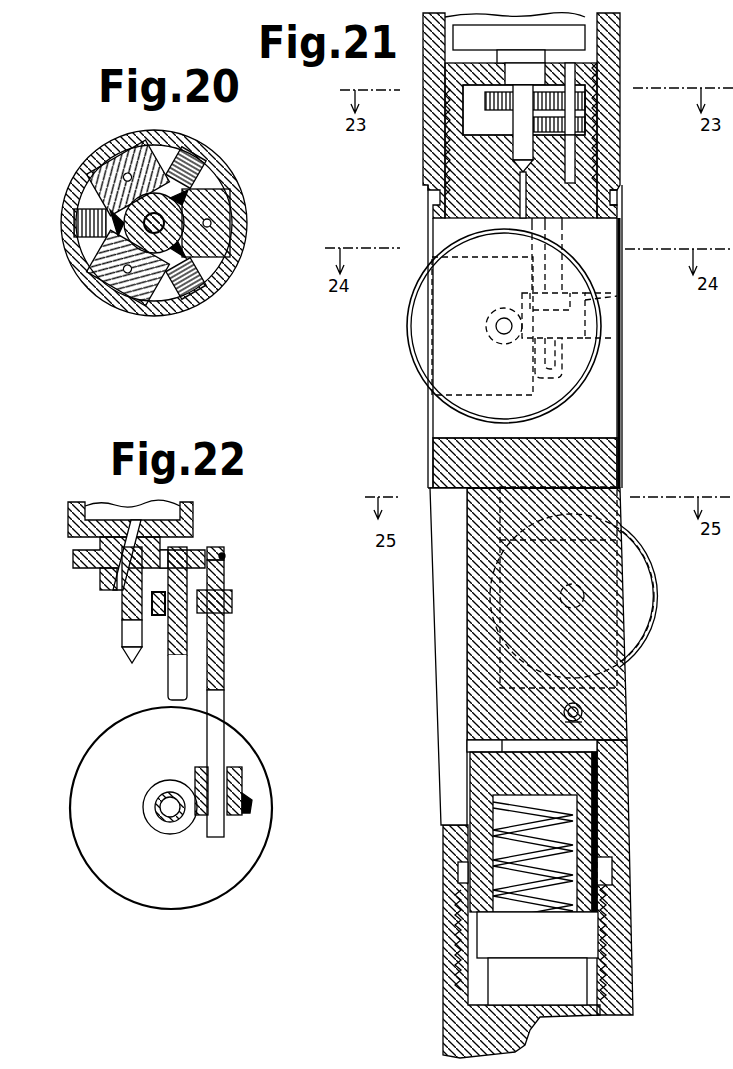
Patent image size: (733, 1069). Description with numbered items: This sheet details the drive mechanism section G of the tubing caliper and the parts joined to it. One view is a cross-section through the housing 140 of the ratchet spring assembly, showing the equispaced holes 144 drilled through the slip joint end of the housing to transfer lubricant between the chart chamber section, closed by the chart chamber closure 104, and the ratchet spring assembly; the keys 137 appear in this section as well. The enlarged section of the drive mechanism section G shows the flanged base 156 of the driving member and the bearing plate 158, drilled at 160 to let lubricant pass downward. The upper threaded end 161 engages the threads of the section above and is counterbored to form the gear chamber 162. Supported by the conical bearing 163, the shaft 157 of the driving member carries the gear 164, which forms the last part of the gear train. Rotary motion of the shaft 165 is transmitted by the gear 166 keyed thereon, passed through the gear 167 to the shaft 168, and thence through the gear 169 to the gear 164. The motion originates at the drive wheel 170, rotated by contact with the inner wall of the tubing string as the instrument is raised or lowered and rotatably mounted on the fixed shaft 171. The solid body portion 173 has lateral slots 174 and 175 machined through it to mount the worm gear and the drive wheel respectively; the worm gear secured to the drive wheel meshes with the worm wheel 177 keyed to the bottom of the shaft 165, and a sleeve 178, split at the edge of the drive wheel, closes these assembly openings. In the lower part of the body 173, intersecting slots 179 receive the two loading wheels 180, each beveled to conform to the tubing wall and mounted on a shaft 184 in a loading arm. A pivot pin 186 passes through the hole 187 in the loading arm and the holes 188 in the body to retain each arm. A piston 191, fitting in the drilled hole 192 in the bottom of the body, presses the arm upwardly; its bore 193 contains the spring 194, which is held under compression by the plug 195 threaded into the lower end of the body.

In FIG. 20, the chart chamber closure 104 is at (245, 212).
In FIG. 20, the key 137 is at (192, 157).
In FIG. 20, the housing 140 is at (213, 240).
In FIG. 20, the equispaced holes 144 is at (127, 177).
In FIG. 21, the flanged base 156 is at (577, 43).
In FIG. 22, the shaft 157 is at (128, 628).
In FIG. 21, the shaft 157 is at (519, 147).
In FIG. 21, the bearing plate 158 is at (586, 68).
In FIG. 21, the drilled hole 160 is at (598, 67).
In FIG. 21, the upper threaded end 161 is at (582, 122).
In FIG. 21, the gear chamber 162 is at (473, 90).
In FIG. 22, the conical bearing 163 is at (128, 653).
In FIG. 21, the conical bearing 163 is at (521, 168).
In FIG. 22, the gear 164 is at (101, 590).
In FIG. 21, the gear 164 is at (485, 105).
In FIG. 22, the shaft 165 is at (217, 706).
In FIG. 21, the shaft 165 is at (555, 223).
In FIG. 22, the gear 166 is at (232, 600).
In FIG. 21, the gear 166 is at (606, 168).
In FIG. 22, the gear 167 is at (160, 617).
In FIG. 21, the gear 167 is at (574, 150).
In FIG. 22, the shaft 168 is at (170, 688).
In FIG. 21, the shaft 168 is at (576, 177).
In FIG. 22, the gear 169 is at (223, 551).
In FIG. 21, the gear 169 is at (574, 98).
In FIG. 22, the drive wheel 170 is at (93, 786).
In FIG. 21, the drive wheel 170 is at (427, 310).
In FIG. 22, the fixed shaft 171 is at (170, 807).
In FIG. 21, the fixed shaft 171 is at (488, 330).
In FIG. 21, the solid body portion 173 is at (622, 467).
In FIG. 21, the lateral slot 174 is at (463, 282).
In FIG. 21, the lateral slot 175 is at (618, 338).
In FIG. 22, the worm wheel 177 is at (250, 789).
In FIG. 21, the worm wheel 177 is at (600, 302).
In FIG. 21, the sleeve 178 is at (585, 315).
In FIG. 21, the intersecting slots 179 is at (437, 583).
In FIG. 21, the loading wheel 180 is at (640, 562).
In FIG. 21, the shaft 184 is at (578, 595).
In FIG. 21, the pivot pin 186 is at (580, 717).
In FIG. 21, the hole 187 is at (570, 725).
In FIG. 21, the holes 188 is at (565, 708).
In FIG. 21, the piston 191 is at (597, 760).
In FIG. 21, the drilled hole 192 is at (592, 743).
In FIG. 21, the bore 193 is at (567, 803).
In FIG. 21, the spring 194 is at (560, 833).
In FIG. 21, the plug 195 is at (623, 916).
In FIG. 21, the drive mechanism section G is at (425, 468).